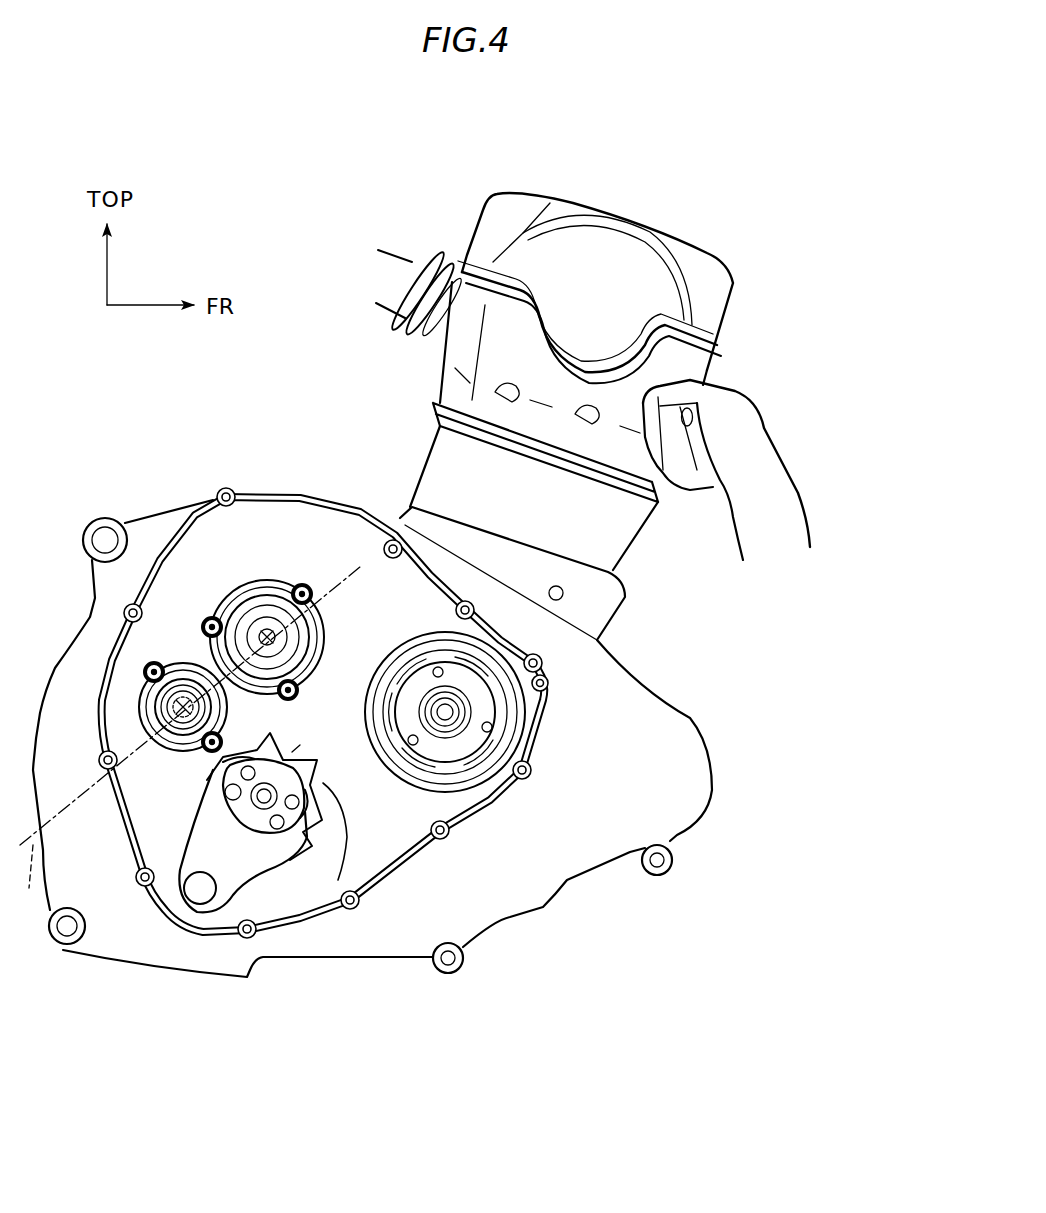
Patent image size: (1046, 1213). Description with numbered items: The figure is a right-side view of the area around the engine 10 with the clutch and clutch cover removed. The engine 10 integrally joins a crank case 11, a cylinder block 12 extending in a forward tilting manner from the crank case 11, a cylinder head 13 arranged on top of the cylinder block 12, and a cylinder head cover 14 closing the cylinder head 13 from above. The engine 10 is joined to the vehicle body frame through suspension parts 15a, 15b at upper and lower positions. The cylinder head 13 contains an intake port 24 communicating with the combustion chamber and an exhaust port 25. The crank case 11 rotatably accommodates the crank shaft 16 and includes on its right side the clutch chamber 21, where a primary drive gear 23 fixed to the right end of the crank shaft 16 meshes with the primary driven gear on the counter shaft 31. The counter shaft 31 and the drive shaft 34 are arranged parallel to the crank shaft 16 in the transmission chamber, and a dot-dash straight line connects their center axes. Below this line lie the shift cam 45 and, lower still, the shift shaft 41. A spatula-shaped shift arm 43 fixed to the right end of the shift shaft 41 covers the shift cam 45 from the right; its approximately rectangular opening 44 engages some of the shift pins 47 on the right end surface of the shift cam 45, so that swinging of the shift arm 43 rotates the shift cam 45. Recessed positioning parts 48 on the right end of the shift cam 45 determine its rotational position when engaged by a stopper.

The engine 10 is at (856, 343).
The crank case 11 is at (716, 727).
The cylinder block 12 is at (632, 551).
The cylinder head 13 is at (722, 382).
The cylinder head cover 14 is at (742, 316).
The suspension part 15a is at (107, 533).
The suspension part 15b is at (65, 928).
The crank shaft 16 is at (455, 722).
The clutch chamber 21 is at (312, 547).
The primary drive gear 23 is at (440, 784).
The intake port 24 is at (448, 335).
The exhaust port 25 is at (682, 470).
The counter shaft 31 is at (268, 634).
The drive shaft 34 is at (172, 650).
The shift shaft 41 is at (205, 893).
The shift arm 43 is at (250, 862).
The opening 44 is at (262, 850).
The shift cam 45 is at (298, 744).
The shift pins 47 is at (292, 809).
The positioning parts 48 is at (338, 882).